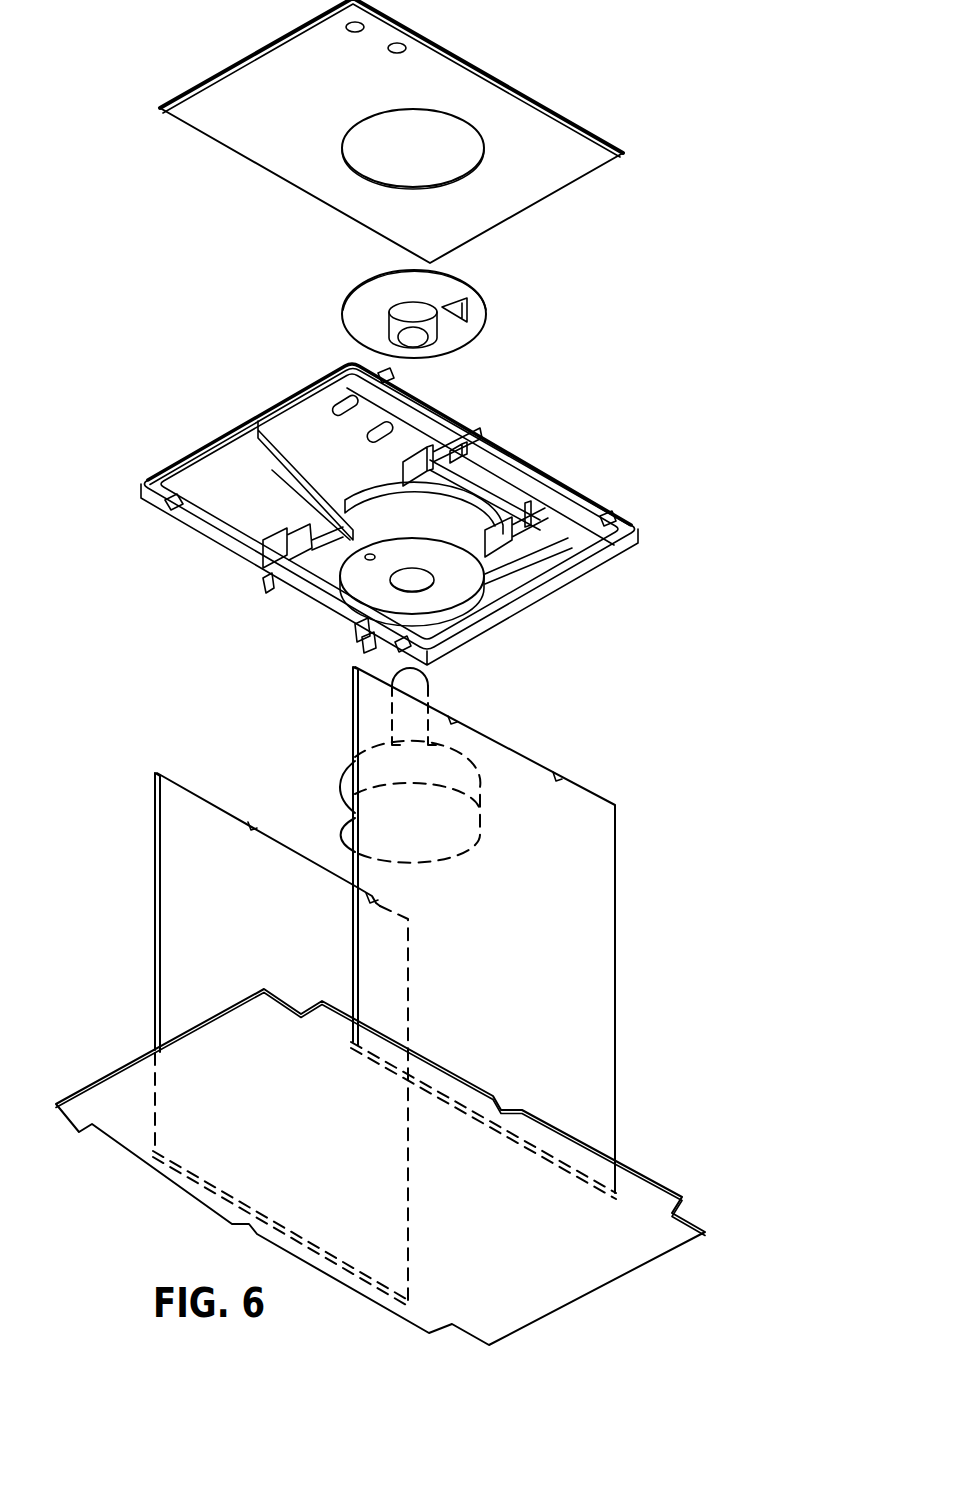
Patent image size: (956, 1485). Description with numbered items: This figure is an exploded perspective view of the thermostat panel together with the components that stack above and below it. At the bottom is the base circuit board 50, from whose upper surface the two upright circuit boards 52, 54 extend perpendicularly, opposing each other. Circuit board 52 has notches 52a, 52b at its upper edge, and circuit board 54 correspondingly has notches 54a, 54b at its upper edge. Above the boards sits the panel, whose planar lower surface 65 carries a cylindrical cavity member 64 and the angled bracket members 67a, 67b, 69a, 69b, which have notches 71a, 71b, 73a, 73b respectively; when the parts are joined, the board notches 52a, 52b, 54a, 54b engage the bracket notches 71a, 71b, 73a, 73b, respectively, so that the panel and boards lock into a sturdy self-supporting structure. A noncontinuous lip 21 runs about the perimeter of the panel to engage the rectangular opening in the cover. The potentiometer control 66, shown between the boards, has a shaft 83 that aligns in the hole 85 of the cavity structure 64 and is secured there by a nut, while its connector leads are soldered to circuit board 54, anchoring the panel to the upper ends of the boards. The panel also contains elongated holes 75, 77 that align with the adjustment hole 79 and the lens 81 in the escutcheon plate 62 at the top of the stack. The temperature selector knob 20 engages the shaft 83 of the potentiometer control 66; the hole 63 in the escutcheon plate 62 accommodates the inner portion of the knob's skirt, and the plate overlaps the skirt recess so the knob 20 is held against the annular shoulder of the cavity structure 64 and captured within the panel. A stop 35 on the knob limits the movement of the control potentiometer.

The temperature selector knob 20 is at (463, 330).
The noncontinuous lip 21 is at (165, 484).
The stop 35 is at (468, 306).
The base circuit board 50 is at (639, 1197).
The circuit board 52 is at (170, 973).
The notch 52a is at (252, 835).
The notch 52b is at (370, 905).
The circuit board 54 is at (606, 1025).
The notch 54a is at (452, 721).
The notch 54b is at (557, 779).
The escutcheon plate 62 is at (533, 122).
The hole 63 is at (453, 115).
The cylindrical cavity member 64 is at (513, 590).
The planar lower surface 65 is at (237, 470).
The potentiometer control 66 is at (340, 800).
The angled bracket member 67a is at (262, 577).
The angled bracket member 67b is at (453, 448).
The angled bracket member 69a is at (358, 636).
The angled bracket member 69b is at (470, 573).
The notch 71a is at (268, 590).
The notch 71b is at (503, 450).
The notch 73a is at (365, 645).
The notch 73b is at (556, 522).
The elongated hole 75 is at (340, 403).
The elongated hole 77 is at (383, 431).
The adjustment hole 79 is at (345, 27).
The lens 81 is at (397, 45).
The shaft 83 is at (426, 689).
The hole 85 is at (418, 584).